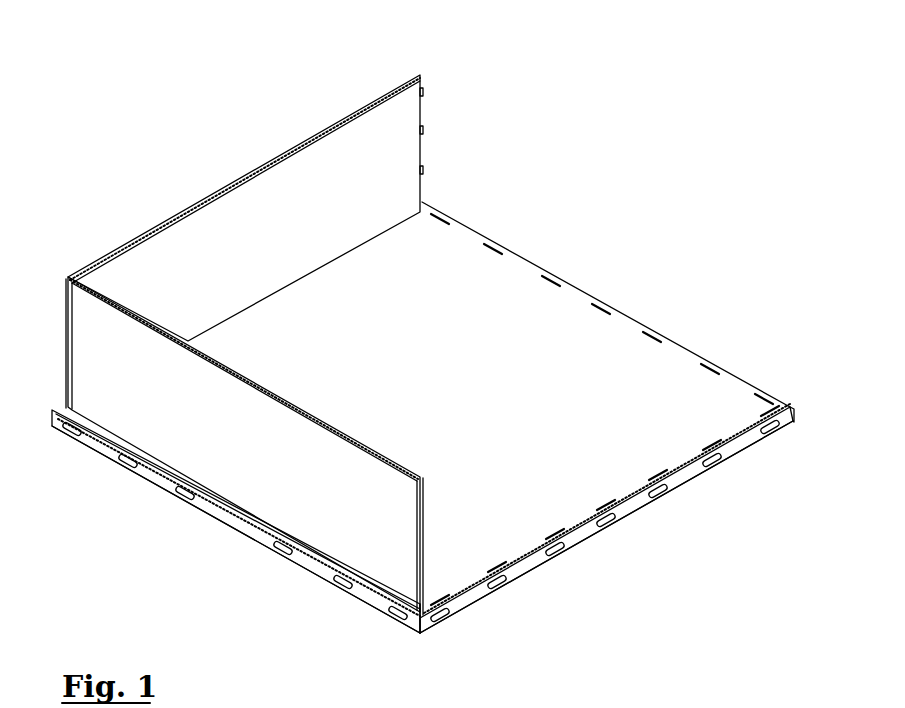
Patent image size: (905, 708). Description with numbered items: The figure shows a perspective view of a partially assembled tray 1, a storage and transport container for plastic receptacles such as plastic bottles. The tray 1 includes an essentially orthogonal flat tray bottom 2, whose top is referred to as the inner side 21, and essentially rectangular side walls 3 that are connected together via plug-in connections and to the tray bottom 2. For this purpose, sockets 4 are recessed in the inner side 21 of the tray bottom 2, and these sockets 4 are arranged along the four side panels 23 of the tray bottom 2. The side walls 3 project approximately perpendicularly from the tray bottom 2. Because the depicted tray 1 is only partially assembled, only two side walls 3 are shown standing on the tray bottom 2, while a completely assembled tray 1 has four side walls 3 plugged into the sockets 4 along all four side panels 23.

The tray 1 is at (130, 128).
The tray bottom 2 is at (577, 285).
The side wall 3 is at (283, 154).
The socket 4 is at (708, 362).
The inner side 21 is at (447, 263).
The side panel 23 is at (222, 519).